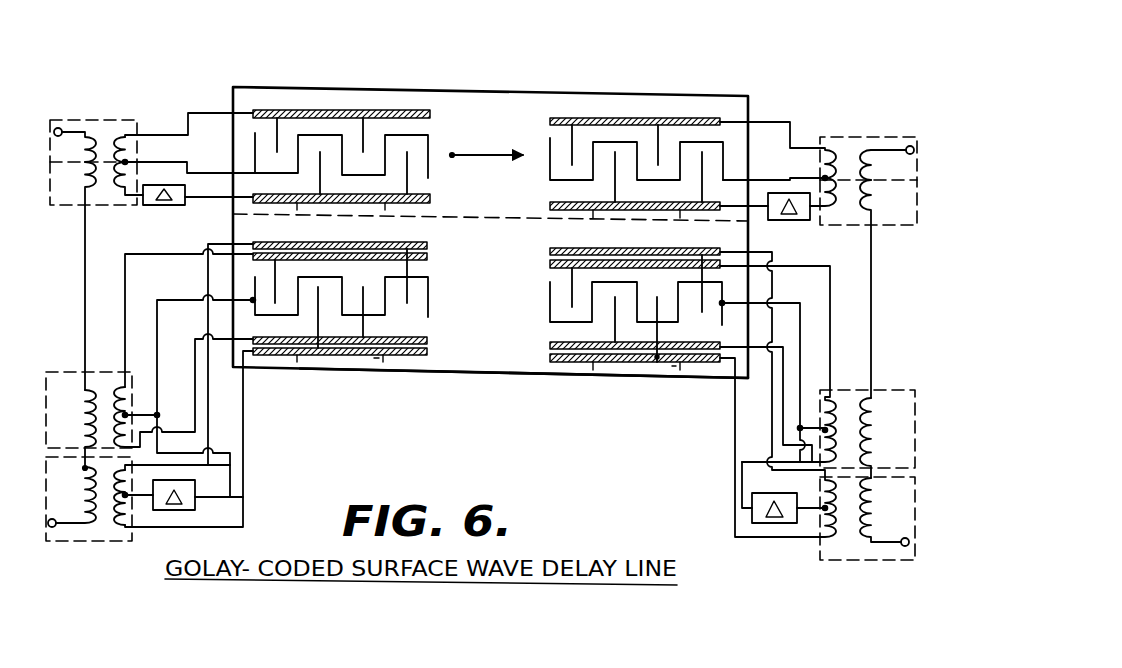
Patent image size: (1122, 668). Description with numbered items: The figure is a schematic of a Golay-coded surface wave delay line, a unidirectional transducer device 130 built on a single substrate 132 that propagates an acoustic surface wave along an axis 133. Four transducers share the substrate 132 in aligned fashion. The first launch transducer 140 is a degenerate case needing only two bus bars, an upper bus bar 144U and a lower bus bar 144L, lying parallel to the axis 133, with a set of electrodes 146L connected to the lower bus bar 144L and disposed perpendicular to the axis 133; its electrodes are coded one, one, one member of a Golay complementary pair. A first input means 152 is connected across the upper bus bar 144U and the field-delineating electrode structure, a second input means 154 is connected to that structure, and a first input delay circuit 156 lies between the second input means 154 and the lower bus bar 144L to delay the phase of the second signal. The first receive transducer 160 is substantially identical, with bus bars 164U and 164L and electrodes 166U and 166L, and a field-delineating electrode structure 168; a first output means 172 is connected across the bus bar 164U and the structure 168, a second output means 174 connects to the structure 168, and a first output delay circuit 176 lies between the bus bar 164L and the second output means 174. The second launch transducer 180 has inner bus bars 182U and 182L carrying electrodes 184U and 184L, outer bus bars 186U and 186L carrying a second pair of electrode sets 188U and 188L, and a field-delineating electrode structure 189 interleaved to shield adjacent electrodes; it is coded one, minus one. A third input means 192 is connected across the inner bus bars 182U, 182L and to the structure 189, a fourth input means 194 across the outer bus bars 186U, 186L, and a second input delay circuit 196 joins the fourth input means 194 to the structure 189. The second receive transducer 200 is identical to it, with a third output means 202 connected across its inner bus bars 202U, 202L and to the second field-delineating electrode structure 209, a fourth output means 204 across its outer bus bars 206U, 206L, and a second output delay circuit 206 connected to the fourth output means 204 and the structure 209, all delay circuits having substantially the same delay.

The unidirectional transducer device 130 is at (536, 64).
The substrate 132 is at (432, 371).
The axis of wave propagation 133 is at (469, 158).
The first launch transducer 140 is at (365, 137).
The upper bus bar 144U is at (290, 98).
The lower bus bar 144L is at (431, 200).
The set of electrodes 146L is at (318, 183).
The first input means 152 is at (58, 120).
The second input means 154 is at (62, 206).
The first input delay circuit 156 is at (156, 206).
The first receive transducer 160 is at (622, 145).
The upper bus bar 164U is at (547, 96).
The lower bus bar 164L is at (550, 206).
The set of electrodes 166U is at (661, 133).
The set of electrodes 166L is at (613, 185).
The field-delineating electrode structure 168 is at (547, 167).
The first output means 172 is at (822, 137).
The second output means 174 is at (822, 225).
The first output delay circuit 176 is at (778, 221).
The second launch transducer 180 is at (358, 292).
The upper inner bus bar 182U is at (429, 257).
The lower inner bus bar 182L is at (429, 341).
The set of electrodes 184U is at (275, 275).
The set of electrodes 184L is at (365, 325).
The upper outer bus bar 186U is at (429, 246).
The lower outer bus bar 186L is at (429, 352).
The set of electrodes 188U is at (407, 280).
The set of electrodes 188L is at (319, 320).
The field-delineating electrode structure 189 is at (266, 314).
The third input means 192 is at (47, 372).
The fourth input means 194 is at (48, 541).
The second input delay circuit 196 is at (195, 511).
The second receive transducer 200 is at (612, 312).
The upper inner bus bar 202U is at (549, 266).
The lower inner bus bar 202L is at (549, 347).
The third output means 202 is at (822, 390).
The fourth output means 204 is at (820, 558).
The upper outer bus bar 206U is at (548, 251).
The lower outer bus bar 206L is at (546, 369).
The second output delay circuit 206 is at (772, 524).
The second field-delineating electrode structure 209 is at (683, 322).